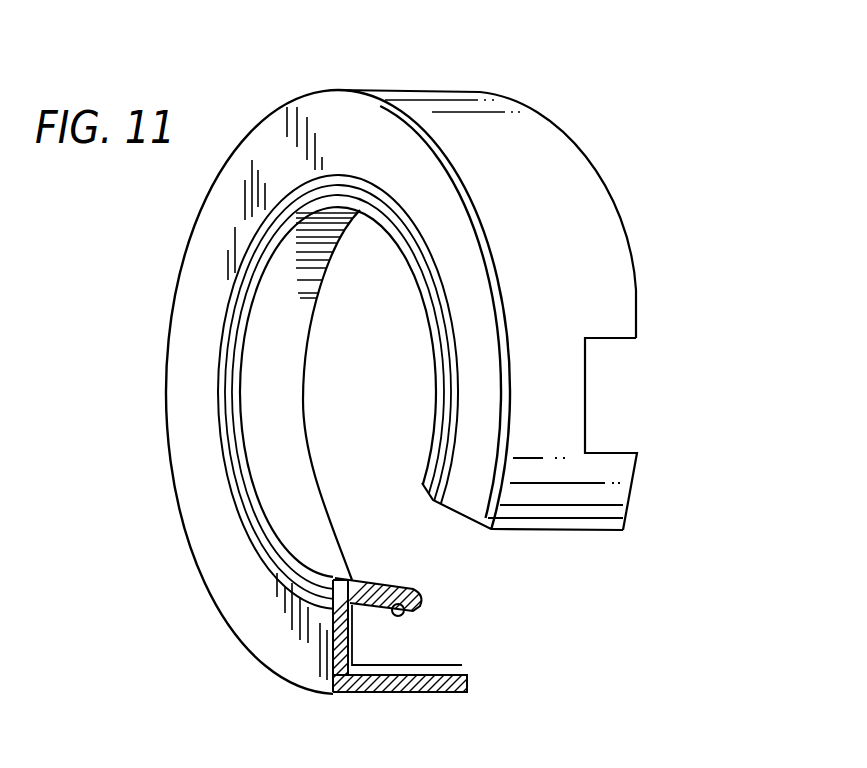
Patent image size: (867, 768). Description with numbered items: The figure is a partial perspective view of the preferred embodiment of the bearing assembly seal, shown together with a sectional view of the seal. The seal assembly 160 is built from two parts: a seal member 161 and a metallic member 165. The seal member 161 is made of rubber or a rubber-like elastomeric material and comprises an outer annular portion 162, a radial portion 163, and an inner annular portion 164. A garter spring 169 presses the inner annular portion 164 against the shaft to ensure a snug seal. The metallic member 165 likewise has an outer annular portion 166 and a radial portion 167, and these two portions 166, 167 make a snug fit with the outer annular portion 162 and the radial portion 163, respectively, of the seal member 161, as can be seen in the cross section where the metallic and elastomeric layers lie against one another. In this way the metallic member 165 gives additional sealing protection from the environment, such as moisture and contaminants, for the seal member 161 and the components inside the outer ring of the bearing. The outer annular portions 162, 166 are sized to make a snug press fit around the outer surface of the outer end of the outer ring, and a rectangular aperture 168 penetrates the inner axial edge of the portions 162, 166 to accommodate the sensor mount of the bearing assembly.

The seal assembly 160 is at (603, 132).
The seal member 161 is at (315, 457).
The outer annular portion 162 is at (353, 607).
The radial portion 163 is at (383, 650).
The inner annular portion 164 is at (413, 590).
The metallic member 165 is at (178, 511).
The outer annular portion 166 is at (555, 193).
The radial portion 167 is at (383, 155).
The rectangular aperture 168 is at (618, 387).
The garter spring 169 is at (404, 614).